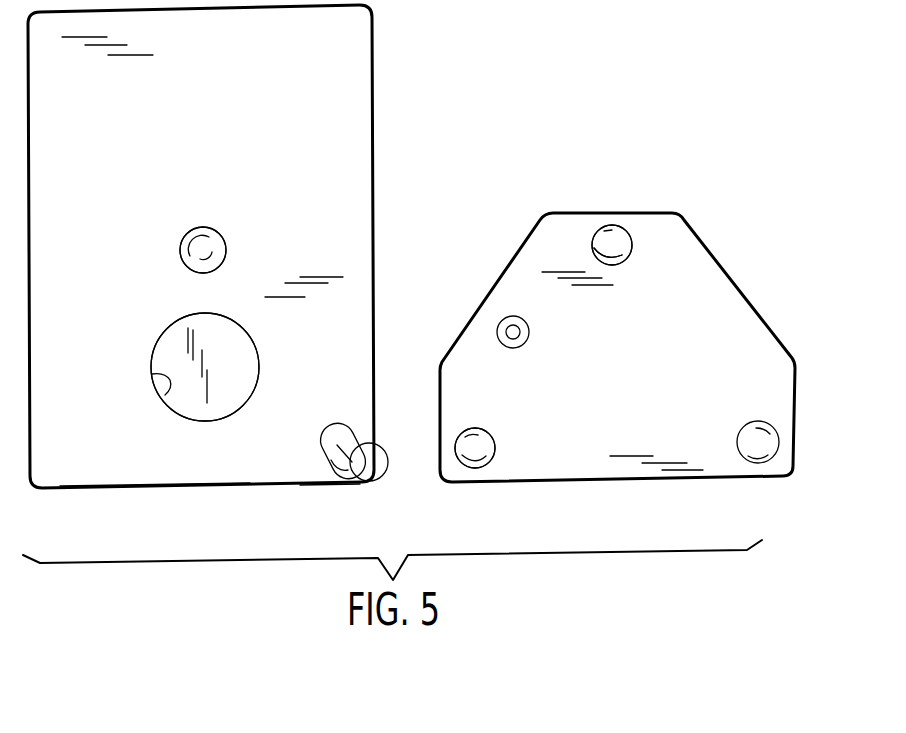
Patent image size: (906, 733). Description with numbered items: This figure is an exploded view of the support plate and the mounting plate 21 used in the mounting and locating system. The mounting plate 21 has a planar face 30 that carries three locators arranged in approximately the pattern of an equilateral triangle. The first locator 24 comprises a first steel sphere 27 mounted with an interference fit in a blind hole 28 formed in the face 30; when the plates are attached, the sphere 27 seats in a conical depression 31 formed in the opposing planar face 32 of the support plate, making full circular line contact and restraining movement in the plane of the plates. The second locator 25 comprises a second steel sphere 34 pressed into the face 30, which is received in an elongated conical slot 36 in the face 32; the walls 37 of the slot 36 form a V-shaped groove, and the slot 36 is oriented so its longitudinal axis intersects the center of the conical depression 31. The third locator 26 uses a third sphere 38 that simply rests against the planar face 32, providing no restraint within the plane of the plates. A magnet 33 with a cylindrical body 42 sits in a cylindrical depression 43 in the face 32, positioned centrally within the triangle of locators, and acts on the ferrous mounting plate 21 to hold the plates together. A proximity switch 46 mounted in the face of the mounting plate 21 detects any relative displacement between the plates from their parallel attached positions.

The mounting plate 21 is at (730, 288).
The first locator 24 is at (184, 229).
The second locator 25 is at (319, 466).
The third locator 26 is at (83, 479).
The first steel sphere 27 is at (608, 226).
The blind hole 28 is at (612, 258).
The planar face 30 is at (631, 352).
The conical depression 31 is at (212, 229).
The planar face 32 is at (107, 239).
The magnet 33 is at (225, 352).
The second steel sphere 34 is at (478, 429).
The elongated conical slot 36 is at (340, 424).
The walls 37 is at (385, 477).
The third sphere 38 is at (768, 422).
The cylindrical body 42 is at (195, 420).
The cylindrical depression 43 is at (171, 385).
The proximity switch 46 is at (518, 315).